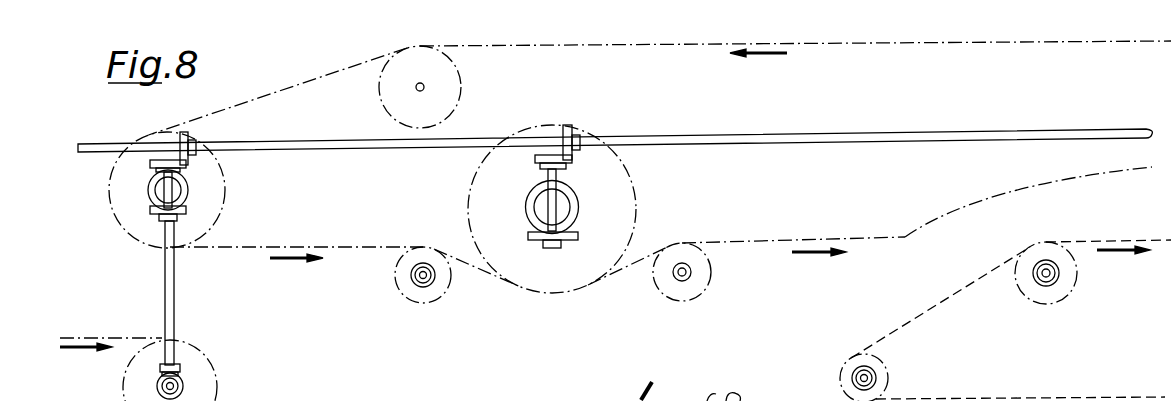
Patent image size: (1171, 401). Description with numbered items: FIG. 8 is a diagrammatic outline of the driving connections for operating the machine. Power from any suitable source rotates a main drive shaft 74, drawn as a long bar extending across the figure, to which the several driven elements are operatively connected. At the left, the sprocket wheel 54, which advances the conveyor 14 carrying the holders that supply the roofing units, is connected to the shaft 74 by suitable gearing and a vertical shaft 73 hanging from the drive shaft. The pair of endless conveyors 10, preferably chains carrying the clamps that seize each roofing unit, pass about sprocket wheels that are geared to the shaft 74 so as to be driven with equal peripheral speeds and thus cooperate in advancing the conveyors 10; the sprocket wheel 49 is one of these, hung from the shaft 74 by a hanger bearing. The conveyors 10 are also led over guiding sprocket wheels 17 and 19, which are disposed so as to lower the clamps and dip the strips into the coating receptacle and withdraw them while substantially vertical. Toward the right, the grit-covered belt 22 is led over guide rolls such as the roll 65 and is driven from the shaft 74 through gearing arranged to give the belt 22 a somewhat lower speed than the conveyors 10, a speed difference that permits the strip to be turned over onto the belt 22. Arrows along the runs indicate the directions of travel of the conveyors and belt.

The main drive shaft 74 is at (709, 122).
The sprocket wheel 49 is at (228, 200).
The shaft 73 is at (165, 268).
The sprocket wheel 54 is at (218, 375).
The conveyor 14 is at (100, 340).
The endless conveyors 10 is at (327, 248).
The sprocket wheel 17 is at (438, 298).
The sprocket wheel 19 is at (688, 297).
The conveyor belt 22 is at (962, 288).
The guide roll 65 is at (842, 369).